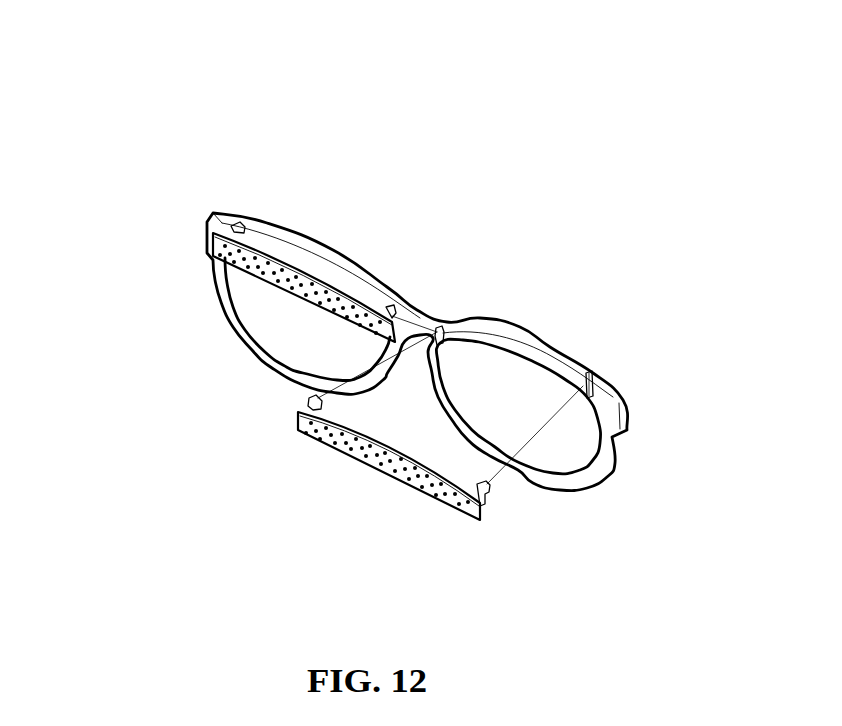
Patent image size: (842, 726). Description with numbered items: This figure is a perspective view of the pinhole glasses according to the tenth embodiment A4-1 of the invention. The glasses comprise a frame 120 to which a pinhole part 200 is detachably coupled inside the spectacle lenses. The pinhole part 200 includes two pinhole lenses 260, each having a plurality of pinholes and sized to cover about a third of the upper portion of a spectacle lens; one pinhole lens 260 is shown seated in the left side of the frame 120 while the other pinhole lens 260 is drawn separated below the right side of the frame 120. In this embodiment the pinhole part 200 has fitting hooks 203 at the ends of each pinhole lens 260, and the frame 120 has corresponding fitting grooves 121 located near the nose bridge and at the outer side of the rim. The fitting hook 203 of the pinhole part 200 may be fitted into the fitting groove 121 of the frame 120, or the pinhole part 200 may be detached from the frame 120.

The tenth embodiment A4-1 is at (313, 175).
The frame 120 is at (540, 332).
The fitting groove 121 is at (438, 337).
The pinhole part 200 is at (345, 426).
The fitting hook 203 is at (300, 392).
The pinhole lens 260 is at (247, 272).